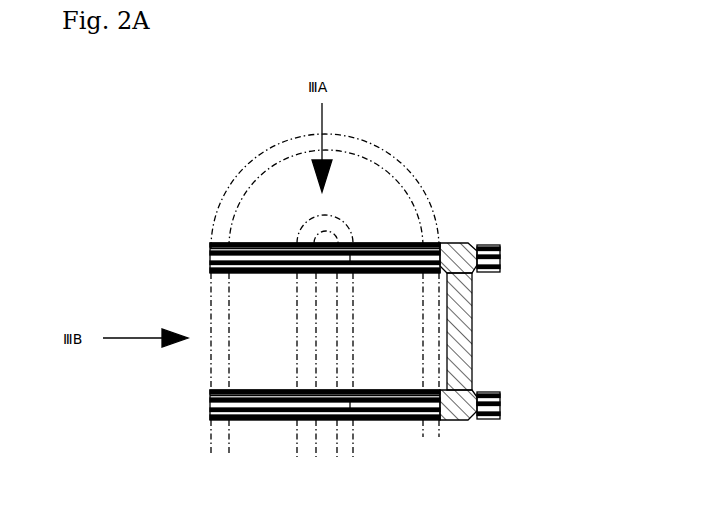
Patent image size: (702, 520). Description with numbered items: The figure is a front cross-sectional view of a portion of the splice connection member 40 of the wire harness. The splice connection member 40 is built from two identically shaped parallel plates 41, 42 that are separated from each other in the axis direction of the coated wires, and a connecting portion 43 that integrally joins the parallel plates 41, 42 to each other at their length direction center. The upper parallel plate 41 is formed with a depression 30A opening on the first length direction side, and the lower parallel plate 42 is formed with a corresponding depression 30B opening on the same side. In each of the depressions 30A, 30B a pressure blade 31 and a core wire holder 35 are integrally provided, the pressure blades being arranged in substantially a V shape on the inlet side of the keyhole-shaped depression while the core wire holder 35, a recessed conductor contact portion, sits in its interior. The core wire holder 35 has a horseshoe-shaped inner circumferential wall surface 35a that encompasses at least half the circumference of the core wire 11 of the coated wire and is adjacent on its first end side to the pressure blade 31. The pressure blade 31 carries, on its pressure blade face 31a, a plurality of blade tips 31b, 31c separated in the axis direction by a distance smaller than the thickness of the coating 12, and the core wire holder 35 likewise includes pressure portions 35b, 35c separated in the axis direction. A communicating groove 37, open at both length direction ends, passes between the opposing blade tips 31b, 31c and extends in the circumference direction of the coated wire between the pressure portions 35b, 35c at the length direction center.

The core wire 11 is at (401, 182).
The coating 12 is at (386, 152).
The depression 30A is at (240, 274).
The depression 30B is at (240, 421).
The pressure blade 31 is at (278, 243).
The pressure blade face 31a is at (254, 262).
The blade tip 31b is at (211, 248).
The blade tip 31c is at (211, 267).
The core wire holder 35 is at (395, 288).
The inner circumferential wall surface 35a is at (409, 256).
The pressure portion 35b is at (378, 274).
The pressure portion 35c is at (381, 252).
The communicating groove 37 is at (211, 258).
The splice connection member 40 is at (486, 284).
The parallel plate 41 is at (486, 232).
The parallel plate 42 is at (487, 382).
The connecting portion 43 is at (472, 335).